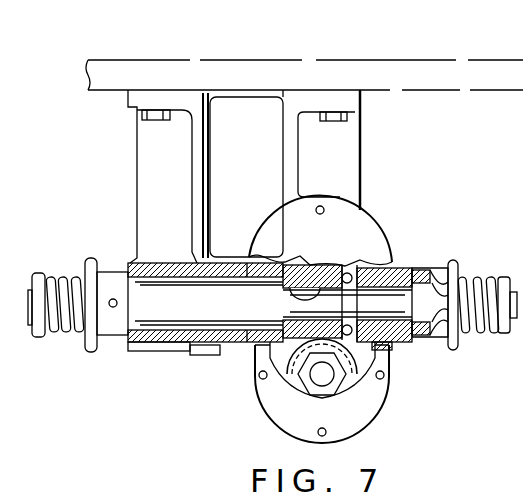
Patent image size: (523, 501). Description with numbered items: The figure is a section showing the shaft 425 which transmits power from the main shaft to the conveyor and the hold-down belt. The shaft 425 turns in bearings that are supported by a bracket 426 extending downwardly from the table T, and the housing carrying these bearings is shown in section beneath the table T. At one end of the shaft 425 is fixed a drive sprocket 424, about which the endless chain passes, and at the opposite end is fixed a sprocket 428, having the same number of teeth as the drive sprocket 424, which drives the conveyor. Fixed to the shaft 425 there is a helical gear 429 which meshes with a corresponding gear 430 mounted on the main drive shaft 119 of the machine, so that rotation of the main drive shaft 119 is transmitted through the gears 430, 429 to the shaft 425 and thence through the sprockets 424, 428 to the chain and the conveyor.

The table T is at (312, 68).
The drive sprocket 424 is at (92, 257).
The shaft 425 is at (244, 290).
The bracket 426 is at (145, 153).
The sprocket 428 is at (452, 270).
The helical gear 429 is at (320, 262).
The gear 430 is at (290, 385).
The main drive shaft 119 is at (335, 398).